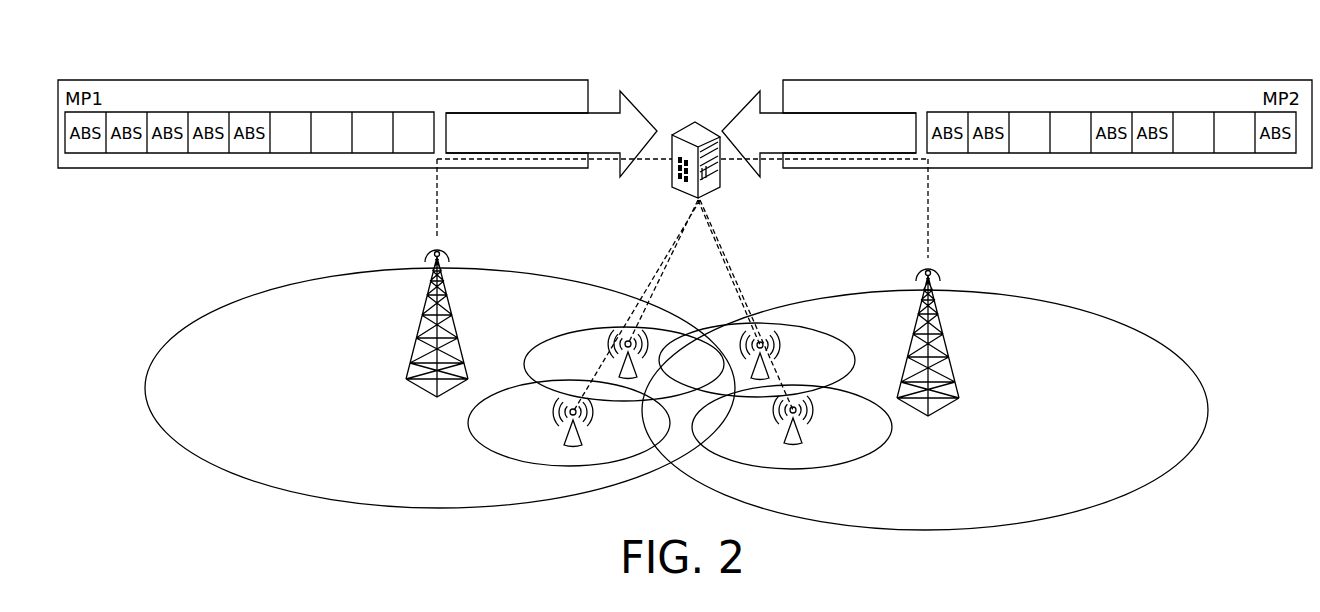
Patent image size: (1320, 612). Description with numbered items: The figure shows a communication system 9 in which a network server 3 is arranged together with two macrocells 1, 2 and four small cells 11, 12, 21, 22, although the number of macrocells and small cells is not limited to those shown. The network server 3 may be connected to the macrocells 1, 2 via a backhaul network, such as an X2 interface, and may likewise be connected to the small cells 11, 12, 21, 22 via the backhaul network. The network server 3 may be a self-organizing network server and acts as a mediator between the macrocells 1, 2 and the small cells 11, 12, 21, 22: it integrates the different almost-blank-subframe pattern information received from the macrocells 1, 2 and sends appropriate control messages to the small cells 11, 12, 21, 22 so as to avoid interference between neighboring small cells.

The communication system 9 is at (1298, 45).
The macrocell 1 is at (411, 352).
The macrocell 2 is at (955, 372).
The network server 3 is at (683, 130).
The small cell 11 is at (621, 368).
The small cell 12 is at (565, 433).
The small cell 21 is at (768, 362).
The small cell 22 is at (802, 427).